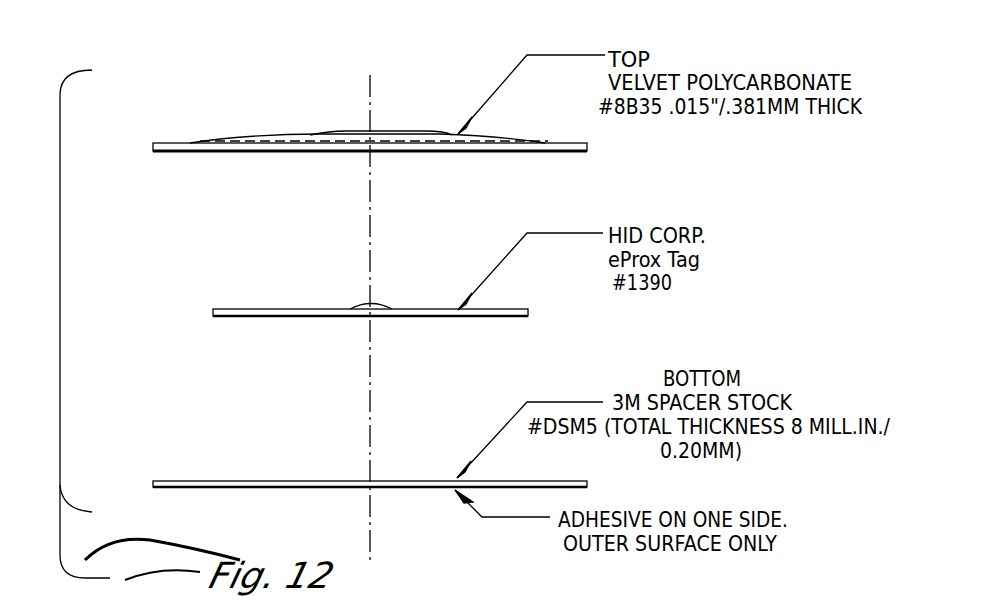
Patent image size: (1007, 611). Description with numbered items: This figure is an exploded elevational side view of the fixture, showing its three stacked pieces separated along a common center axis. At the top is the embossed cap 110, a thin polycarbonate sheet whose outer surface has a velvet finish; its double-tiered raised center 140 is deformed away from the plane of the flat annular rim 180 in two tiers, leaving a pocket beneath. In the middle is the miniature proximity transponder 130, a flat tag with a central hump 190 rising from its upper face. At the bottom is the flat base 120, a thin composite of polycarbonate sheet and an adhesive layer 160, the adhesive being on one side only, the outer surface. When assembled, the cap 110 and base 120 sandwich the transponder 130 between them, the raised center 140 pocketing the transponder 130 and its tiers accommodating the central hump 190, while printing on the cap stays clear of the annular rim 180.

The embossed cap 110 is at (283, 133).
The double-tiered raised center 140 is at (252, 138).
The annular rim 180 is at (560, 148).
The miniature proximity transponder 130 is at (268, 310).
The central hump 190 is at (358, 305).
The flat base 120 is at (280, 481).
The adhesive layer 160 is at (312, 487).